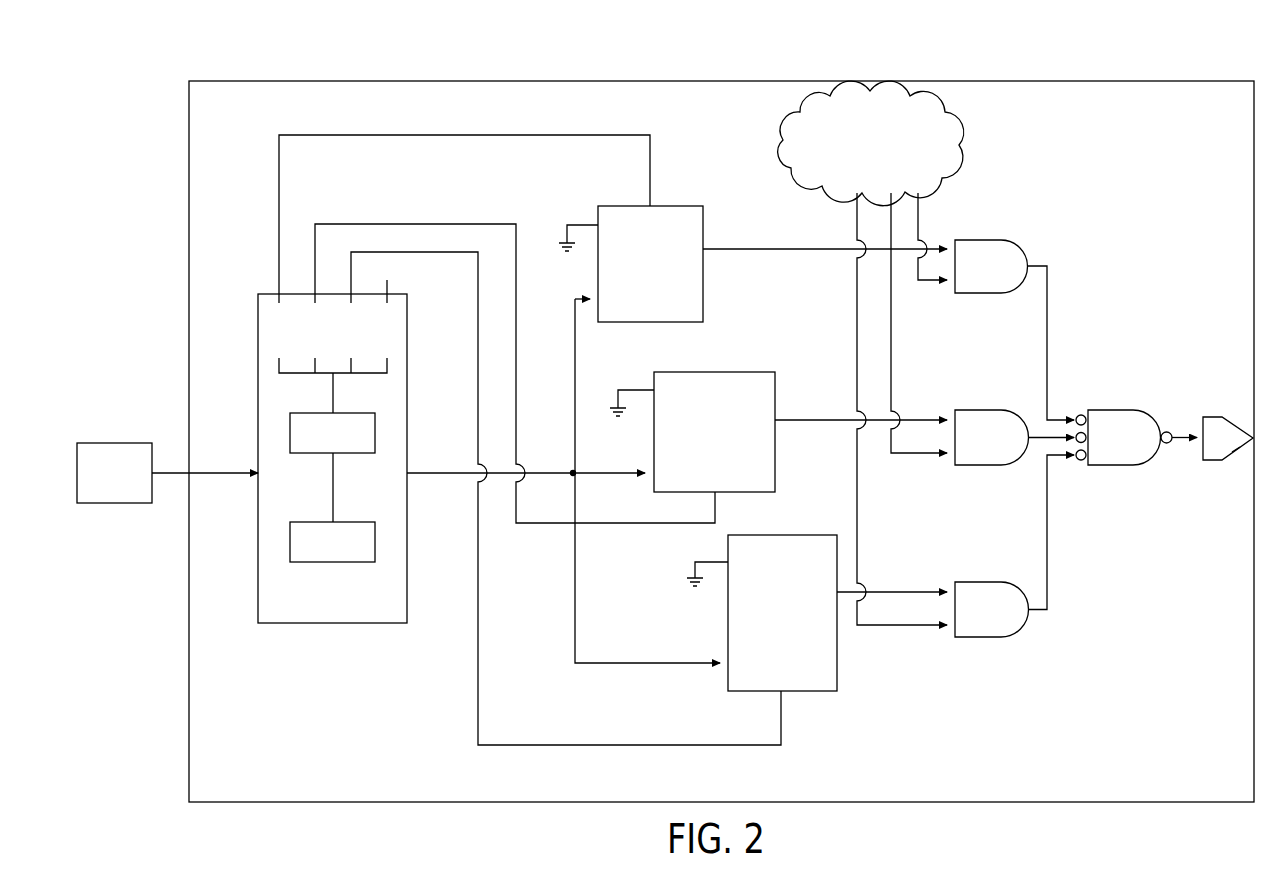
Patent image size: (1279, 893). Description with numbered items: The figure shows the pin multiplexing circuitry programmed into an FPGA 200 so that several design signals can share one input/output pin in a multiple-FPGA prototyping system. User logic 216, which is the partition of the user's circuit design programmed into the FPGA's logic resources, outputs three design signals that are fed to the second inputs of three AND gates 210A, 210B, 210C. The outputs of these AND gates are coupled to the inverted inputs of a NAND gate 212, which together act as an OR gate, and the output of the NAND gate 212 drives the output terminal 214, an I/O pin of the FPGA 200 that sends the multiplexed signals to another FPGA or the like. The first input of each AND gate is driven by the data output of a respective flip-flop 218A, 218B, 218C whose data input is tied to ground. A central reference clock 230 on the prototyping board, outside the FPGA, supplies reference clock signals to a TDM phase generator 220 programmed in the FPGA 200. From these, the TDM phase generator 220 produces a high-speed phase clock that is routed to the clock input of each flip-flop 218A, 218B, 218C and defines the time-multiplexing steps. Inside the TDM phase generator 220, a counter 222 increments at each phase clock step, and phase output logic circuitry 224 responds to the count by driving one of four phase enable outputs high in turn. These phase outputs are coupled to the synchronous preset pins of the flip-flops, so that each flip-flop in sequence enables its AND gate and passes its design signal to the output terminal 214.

The FPGA 200 is at (1073, 80).
The AND gate 210A is at (997, 238).
The AND gate 210B is at (997, 408).
The AND gate 210C is at (1000, 580).
The NAND gate 212 is at (1135, 407).
The output terminal 214 is at (1217, 415).
The user logic 216 is at (962, 143).
The flip-flop 218A is at (676, 205).
The flip-flop 218B is at (737, 371).
The flip-flop 218C is at (800, 534).
The TDM phase generator 220 is at (346, 605).
The counter 222 is at (375, 545).
The phase output logic circuitry 224 is at (375, 436).
The central reference clock 230 is at (115, 440).